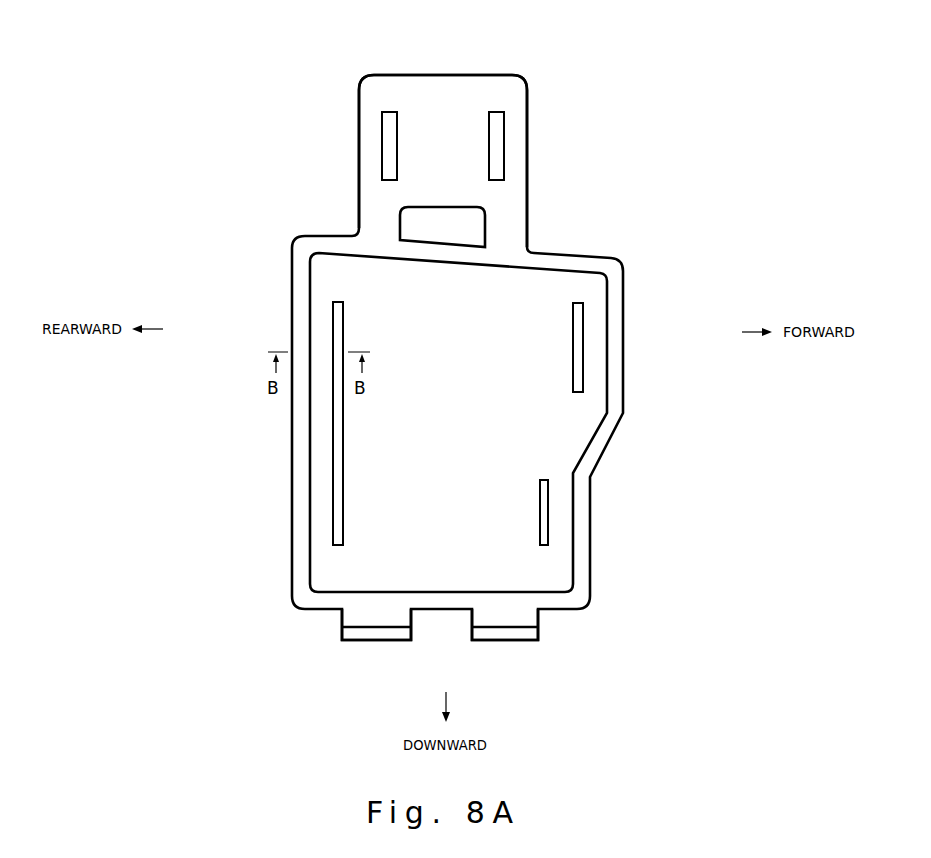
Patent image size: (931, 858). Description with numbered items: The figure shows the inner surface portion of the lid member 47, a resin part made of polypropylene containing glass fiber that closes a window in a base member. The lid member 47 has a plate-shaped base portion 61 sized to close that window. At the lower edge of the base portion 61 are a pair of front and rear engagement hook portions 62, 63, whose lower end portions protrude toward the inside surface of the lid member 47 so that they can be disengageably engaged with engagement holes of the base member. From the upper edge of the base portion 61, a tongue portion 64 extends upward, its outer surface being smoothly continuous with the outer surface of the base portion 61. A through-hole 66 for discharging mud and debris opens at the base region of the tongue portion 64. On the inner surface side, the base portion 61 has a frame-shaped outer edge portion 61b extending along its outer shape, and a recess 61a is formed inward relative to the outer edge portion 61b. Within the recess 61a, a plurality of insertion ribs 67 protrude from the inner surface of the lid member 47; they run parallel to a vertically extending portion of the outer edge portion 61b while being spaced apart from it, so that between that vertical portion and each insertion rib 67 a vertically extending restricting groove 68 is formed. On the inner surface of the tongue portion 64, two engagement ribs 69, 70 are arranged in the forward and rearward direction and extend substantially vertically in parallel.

The lid member 47 is at (619, 257).
The base portion 61 is at (298, 240).
The recess 61a is at (550, 412).
The outer edge portion 61b is at (613, 305).
The engagement hook portion 62 is at (540, 627).
The engagement hook portion 63 is at (411, 627).
The tongue portion 64 is at (442, 130).
The through-hole 66 is at (490, 219).
The insertion rib 67 is at (335, 483).
The restricting groove 68 is at (323, 468).
The engagement rib 69 is at (493, 105).
The engagement rib 70 is at (389, 105).